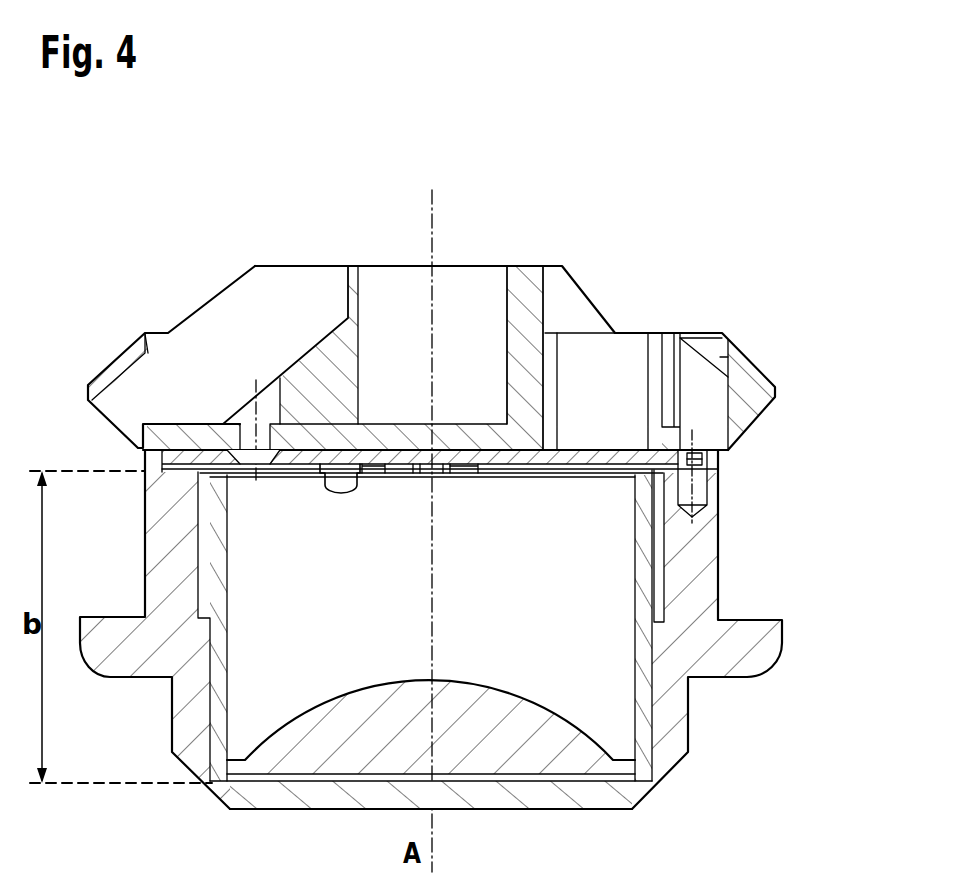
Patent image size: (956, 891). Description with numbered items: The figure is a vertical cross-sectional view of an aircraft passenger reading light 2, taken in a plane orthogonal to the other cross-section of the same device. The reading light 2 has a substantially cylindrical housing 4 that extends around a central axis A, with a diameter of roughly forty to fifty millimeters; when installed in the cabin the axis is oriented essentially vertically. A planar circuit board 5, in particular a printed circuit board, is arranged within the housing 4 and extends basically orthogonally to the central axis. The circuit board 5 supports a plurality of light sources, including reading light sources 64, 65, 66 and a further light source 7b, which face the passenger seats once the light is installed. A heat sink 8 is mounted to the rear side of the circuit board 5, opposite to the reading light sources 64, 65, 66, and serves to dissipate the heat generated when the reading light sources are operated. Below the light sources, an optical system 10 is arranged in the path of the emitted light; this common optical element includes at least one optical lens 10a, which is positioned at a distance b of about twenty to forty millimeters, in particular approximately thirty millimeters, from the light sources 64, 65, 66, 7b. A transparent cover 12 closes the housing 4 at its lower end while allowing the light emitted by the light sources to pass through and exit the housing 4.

The aircraft passenger reading light 2 is at (778, 288).
The housing 4 is at (732, 533).
The circuit board 5 is at (572, 500).
The light source 7b is at (324, 497).
The heat sink 8 is at (517, 282).
The optical system 10 is at (585, 718).
The optical lens 10a is at (570, 757).
The transparent cover 12 is at (277, 793).
The reading light source 64 is at (394, 480).
The reading light source 65 is at (439, 480).
The reading light source 66 is at (471, 480).